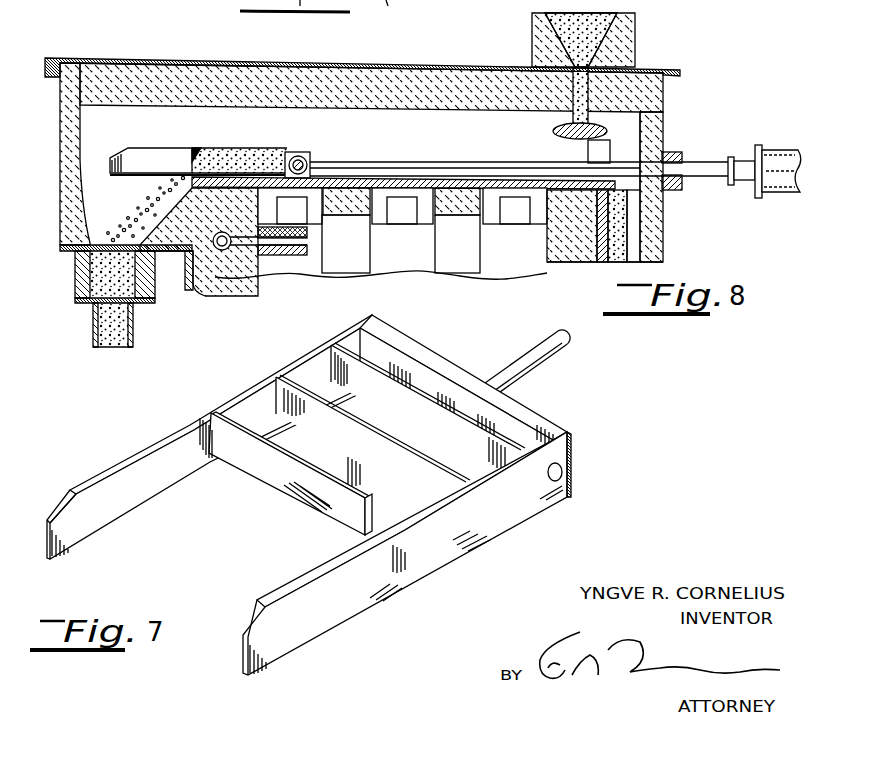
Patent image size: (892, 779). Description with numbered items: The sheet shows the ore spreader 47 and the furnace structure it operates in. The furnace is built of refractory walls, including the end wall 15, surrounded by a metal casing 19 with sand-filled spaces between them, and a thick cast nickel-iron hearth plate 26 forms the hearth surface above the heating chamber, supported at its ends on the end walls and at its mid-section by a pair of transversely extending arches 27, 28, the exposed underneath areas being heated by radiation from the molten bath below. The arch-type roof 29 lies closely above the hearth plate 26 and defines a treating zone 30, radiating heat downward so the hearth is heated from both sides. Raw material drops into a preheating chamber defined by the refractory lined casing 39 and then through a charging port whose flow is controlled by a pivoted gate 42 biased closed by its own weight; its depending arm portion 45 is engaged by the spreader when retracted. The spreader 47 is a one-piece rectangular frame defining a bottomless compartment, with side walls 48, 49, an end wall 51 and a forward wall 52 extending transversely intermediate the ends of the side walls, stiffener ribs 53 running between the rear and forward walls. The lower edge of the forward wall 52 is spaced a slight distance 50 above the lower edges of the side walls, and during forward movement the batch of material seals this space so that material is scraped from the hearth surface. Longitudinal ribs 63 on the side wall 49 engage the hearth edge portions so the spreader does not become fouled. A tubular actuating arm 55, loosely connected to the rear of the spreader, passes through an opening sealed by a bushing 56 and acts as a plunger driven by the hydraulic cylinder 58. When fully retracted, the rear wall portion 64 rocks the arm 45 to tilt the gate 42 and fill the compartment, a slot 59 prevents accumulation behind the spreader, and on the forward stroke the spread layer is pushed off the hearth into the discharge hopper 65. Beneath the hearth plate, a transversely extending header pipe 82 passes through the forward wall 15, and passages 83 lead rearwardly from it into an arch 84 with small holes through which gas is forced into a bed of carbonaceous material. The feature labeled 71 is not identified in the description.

In FIG. 8, the end wall 15 is at (68, 162).
In FIG. 8, the metal casing 19 is at (173, 60).
In FIG. 8, the hearth plate 26 is at (403, 180).
In FIG. 8, the arch 27 is at (354, 215).
In FIG. 8, the arch 28 is at (463, 215).
In FIG. 8, the roof 29 is at (391, 74).
In FIG. 8, the treating zone 30 is at (480, 147).
In FIG. 8, the refractory lined rectangular casing 39 is at (636, 43).
In FIG. 8, the gate 42 is at (565, 135).
In FIG. 8, the depending arm portion 45 is at (594, 156).
In FIG. 8, the ore spreader 47 is at (160, 147).
In FIG. 7, the side wall 48 is at (157, 446).
In FIG. 7, the side wall 49 is at (307, 591).
In FIG. 7, the space 50 is at (214, 468).
In FIG. 7, the end wall 51 is at (502, 398).
In FIG. 8, the forward wall 52 is at (210, 142).
In FIG. 7, the forward wall 52 is at (275, 487).
In FIG. 7, the stiffener ribs 53 is at (375, 430).
In FIG. 8, the tubular actuating arm 55 is at (702, 166).
In FIG. 7, the tubular actuating arm 55 is at (528, 352).
In FIG. 8, the bushing 56 is at (670, 152).
In FIG. 8, the hydraulic cylinder 58 is at (772, 150).
In FIG. 8, the slot 59 is at (632, 220).
In FIG. 7, the longitudinal ribs 63 is at (480, 534).
In FIG. 8, the rear wall portion 64 is at (298, 152).
In FIG. 7, the rear wall portion 64 is at (540, 427).
In FIG. 8, the discharge hopper 65 is at (143, 208).
In FIG. 8, the opening 71 is at (402, 224).
In FIG. 8, the header pipe 82 is at (220, 250).
In FIG. 8, the passages 83 is at (283, 240).
In FIG. 8, the arch 84 is at (293, 254).